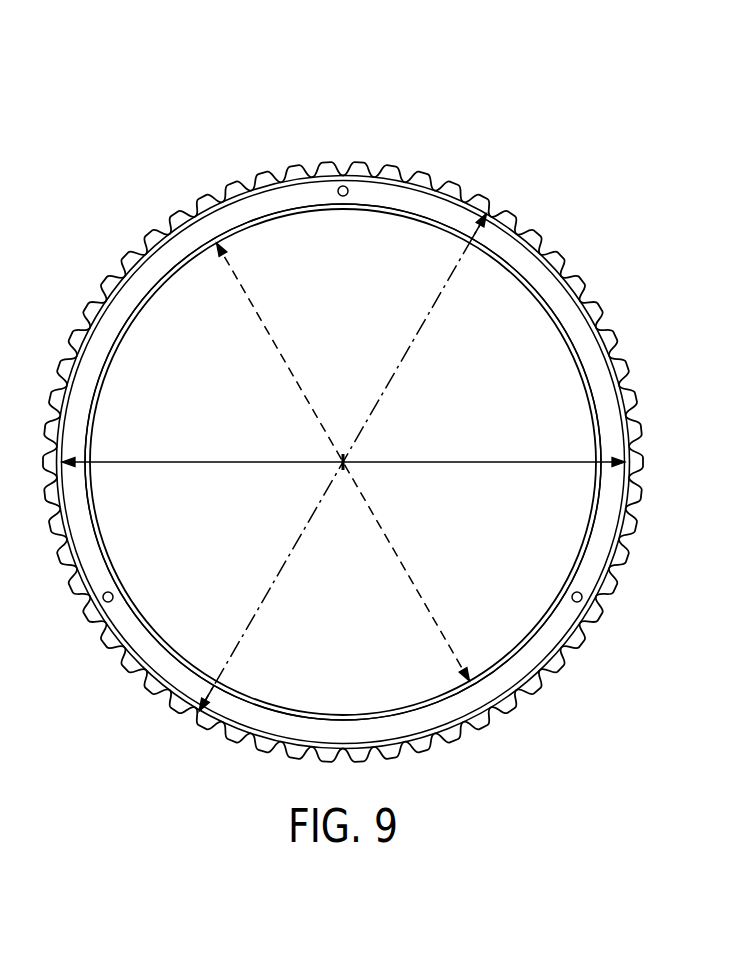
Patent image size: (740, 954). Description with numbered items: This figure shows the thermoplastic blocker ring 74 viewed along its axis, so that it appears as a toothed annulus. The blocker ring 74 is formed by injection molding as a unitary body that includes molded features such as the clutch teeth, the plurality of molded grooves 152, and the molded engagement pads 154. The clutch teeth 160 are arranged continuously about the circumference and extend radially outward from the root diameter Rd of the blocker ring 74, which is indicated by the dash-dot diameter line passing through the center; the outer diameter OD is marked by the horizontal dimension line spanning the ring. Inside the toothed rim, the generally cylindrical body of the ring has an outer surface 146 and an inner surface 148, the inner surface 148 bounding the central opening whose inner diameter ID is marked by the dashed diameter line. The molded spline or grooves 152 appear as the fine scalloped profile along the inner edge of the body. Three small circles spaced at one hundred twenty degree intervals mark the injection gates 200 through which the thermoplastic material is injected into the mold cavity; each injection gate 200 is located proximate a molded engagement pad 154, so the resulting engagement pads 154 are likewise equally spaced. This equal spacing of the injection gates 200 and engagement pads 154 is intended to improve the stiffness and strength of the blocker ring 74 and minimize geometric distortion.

The blocker ring 74 is at (518, 95).
The external gear teeth 160 is at (594, 271).
The outer surface 146 is at (482, 717).
The molded engagement pad 154 is at (301, 216).
The molded grooves 152 is at (174, 298).
The inner surface 148 is at (140, 618).
The injection gates 200 is at (349, 209).
The outer diameter OD is at (285, 462).
The root diameter Rd is at (425, 344).
The inner diameter ID is at (400, 558).